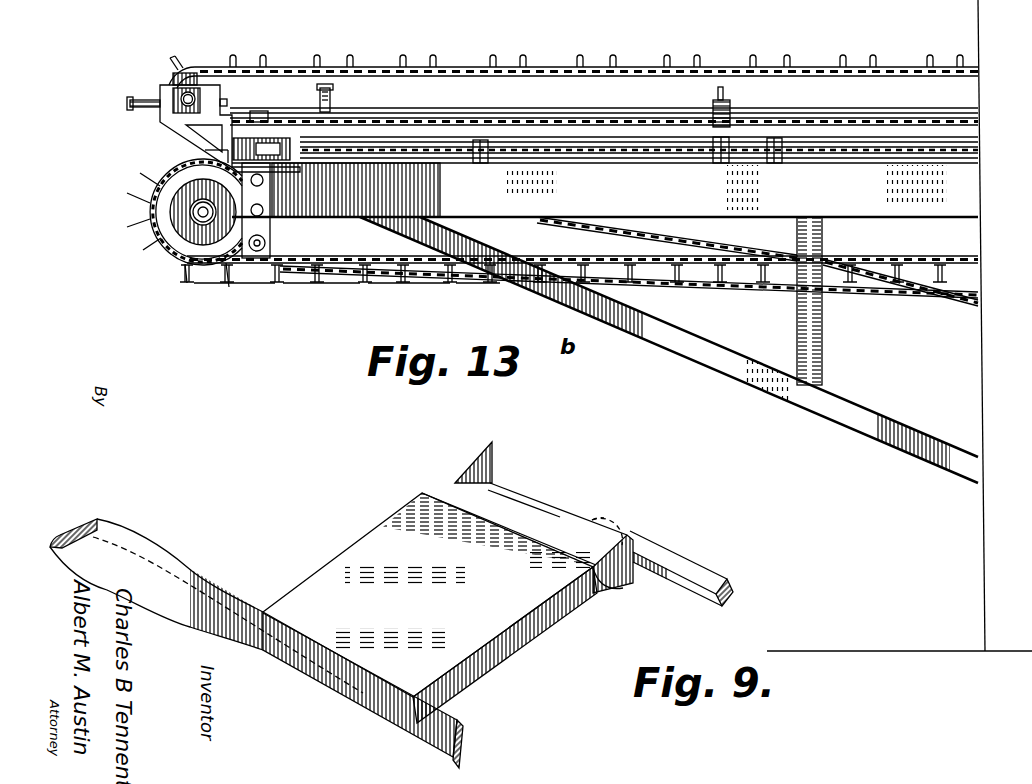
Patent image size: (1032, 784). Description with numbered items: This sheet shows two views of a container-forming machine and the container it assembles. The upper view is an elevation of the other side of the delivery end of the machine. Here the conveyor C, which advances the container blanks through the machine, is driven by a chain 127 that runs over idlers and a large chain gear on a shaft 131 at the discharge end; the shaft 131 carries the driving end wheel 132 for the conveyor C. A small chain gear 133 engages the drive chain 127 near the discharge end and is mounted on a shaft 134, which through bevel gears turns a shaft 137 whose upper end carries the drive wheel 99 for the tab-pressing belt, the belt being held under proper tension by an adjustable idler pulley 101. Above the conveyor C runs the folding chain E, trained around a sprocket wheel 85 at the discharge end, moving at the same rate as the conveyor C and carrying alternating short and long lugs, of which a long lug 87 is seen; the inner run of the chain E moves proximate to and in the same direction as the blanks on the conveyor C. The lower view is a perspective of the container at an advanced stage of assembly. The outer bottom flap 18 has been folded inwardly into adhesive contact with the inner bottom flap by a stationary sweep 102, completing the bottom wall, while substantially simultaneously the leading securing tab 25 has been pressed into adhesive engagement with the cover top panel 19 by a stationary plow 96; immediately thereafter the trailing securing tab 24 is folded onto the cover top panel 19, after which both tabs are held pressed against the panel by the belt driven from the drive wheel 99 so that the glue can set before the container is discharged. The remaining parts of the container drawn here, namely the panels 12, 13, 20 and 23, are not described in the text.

In FIG. 13b, the sprocket wheel 85 is at (190, 72).
In FIG. 13b, the shaft 137 is at (262, 98).
In FIG. 13b, the drive wheel 99 is at (267, 117).
In FIG. 13b, the idler pulley 101 is at (322, 117).
In FIG. 13b, the long lug 87 is at (573, 127).
In FIG. 13b, the folding chain E is at (455, 66).
In FIG. 13b, the chain 127 is at (703, 238).
In FIG. 13b, the driving end wheel 132 is at (187, 222).
In FIG. 13b, the shaft 131 is at (205, 217).
In FIG. 13b, the small chain gear 133 is at (272, 235).
In FIG. 13b, the shaft 134 is at (262, 266).
In FIG. 13b, the conveyor C is at (350, 257).
In FIG. 9, the trailing securing tab 24 is at (490, 457).
In FIG. 9, the rail flange 20 is at (517, 501).
In FIG. 9, the cover top panel 19 is at (558, 507).
In FIG. 9, the leading securing tab 25 is at (620, 527).
In FIG. 9, the stationary plow 96 is at (697, 573).
In FIG. 9, the end block 23 is at (620, 595).
In FIG. 9, the plate 13 is at (428, 595).
In FIG. 9, the side wall 12 is at (523, 655).
In FIG. 9, the outer bottom flap 18 is at (345, 708).
In FIG. 9, the stationary sweep 102 is at (148, 596).